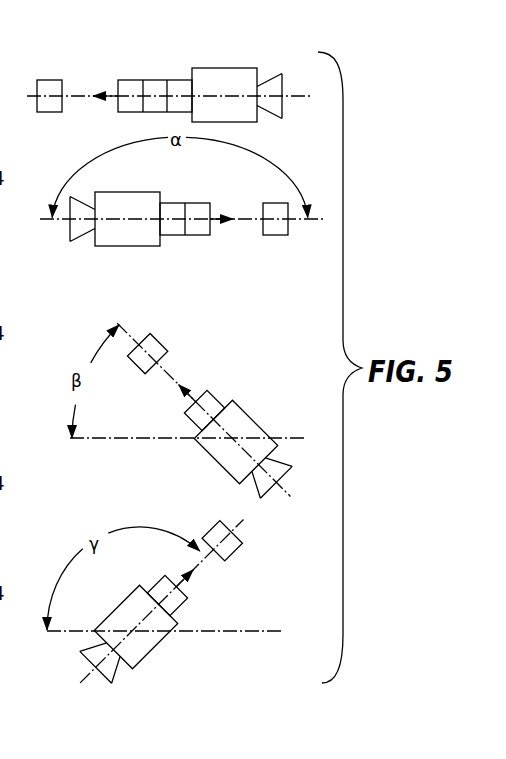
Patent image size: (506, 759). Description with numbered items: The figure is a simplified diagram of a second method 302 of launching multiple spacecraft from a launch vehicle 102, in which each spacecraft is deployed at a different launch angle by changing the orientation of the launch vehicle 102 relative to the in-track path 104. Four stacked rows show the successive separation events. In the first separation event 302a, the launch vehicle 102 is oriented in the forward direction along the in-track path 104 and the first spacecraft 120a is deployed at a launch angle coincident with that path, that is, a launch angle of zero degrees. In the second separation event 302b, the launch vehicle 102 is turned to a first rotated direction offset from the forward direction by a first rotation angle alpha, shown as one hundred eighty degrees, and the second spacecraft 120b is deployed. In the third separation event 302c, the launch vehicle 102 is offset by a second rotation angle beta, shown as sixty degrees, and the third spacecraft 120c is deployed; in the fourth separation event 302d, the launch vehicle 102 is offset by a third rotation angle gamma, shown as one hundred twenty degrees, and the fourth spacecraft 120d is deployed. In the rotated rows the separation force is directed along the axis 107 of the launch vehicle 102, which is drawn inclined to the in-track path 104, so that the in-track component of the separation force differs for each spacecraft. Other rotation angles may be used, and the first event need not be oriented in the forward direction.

The launch vehicle 102 is at (224, 68).
The in-track path 104 is at (287, 100).
The axis of the launch vehicle 107 is at (215, 473).
The first spacecraft 120a is at (50, 111).
The second spacecraft 120b is at (281, 235).
The third spacecraft 120c is at (160, 341).
The fourth spacecraft 120d is at (238, 550).
The second method 302 is at (121, 61).
The first separation event 302a is at (221, 41).
The second separation event 302b is at (212, 249).
The third separation event 302c is at (236, 384).
The fourth separation event 302d is at (144, 696).